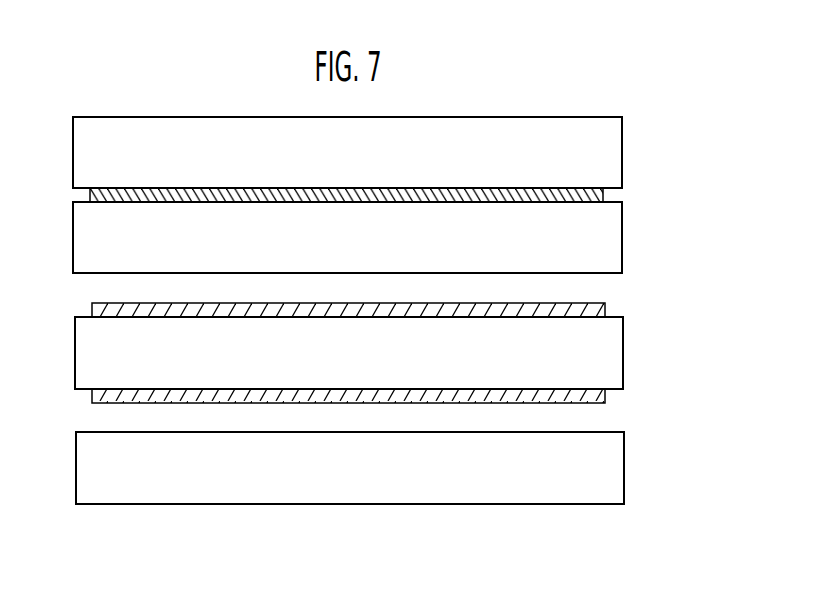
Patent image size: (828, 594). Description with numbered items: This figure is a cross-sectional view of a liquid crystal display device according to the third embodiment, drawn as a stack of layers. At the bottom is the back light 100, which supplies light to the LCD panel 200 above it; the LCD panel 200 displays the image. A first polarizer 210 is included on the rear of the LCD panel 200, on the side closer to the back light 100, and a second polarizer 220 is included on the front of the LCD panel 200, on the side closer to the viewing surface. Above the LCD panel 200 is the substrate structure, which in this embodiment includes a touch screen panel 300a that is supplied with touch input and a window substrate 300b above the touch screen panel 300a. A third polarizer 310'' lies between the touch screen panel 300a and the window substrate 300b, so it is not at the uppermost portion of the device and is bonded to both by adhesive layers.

The window substrate 300b is at (622, 145).
The third polarizer 310'' is at (383, 198).
The touch screen panel 300a is at (622, 238).
The second polarizer 220 is at (605, 306).
The LCD panel 200 is at (623, 355).
The first polarizer 210 is at (605, 395).
The back light 100 is at (625, 462).